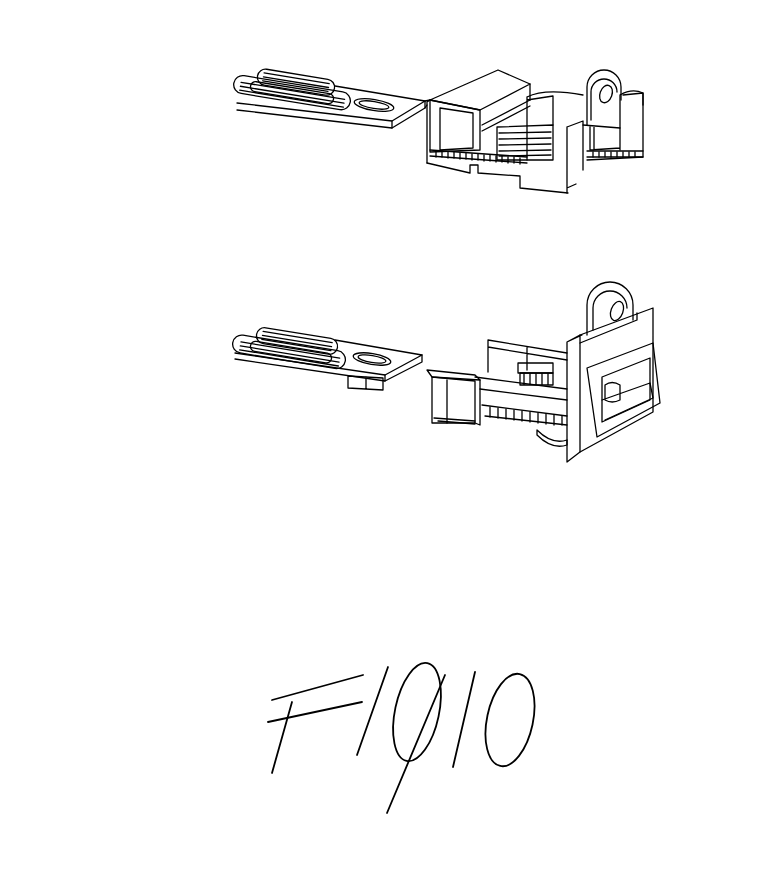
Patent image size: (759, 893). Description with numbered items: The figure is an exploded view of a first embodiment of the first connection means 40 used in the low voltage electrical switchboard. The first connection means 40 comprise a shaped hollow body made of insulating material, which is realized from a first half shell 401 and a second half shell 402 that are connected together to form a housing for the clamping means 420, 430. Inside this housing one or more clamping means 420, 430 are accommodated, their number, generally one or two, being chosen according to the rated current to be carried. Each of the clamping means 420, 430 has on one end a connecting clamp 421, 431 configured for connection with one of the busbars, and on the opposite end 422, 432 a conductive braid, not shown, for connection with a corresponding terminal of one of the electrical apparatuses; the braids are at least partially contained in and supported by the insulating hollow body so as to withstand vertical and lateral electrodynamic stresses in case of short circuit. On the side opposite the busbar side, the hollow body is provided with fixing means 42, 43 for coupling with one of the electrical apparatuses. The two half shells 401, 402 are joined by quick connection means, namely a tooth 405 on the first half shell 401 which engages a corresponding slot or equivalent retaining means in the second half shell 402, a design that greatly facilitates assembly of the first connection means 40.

The first connection means 40 is at (128, 124).
The clamping means 430 is at (343, 117).
The connecting clamp 431 is at (262, 102).
The opposite end 432 is at (402, 98).
The second half shell 402 is at (537, 68).
The fixing means 43 is at (617, 78).
The clamping means 420 is at (320, 387).
The connecting clamp 421 is at (232, 348).
The opposite end 422 is at (383, 376).
The first half shell 401 is at (520, 420).
The tooth 405 is at (533, 365).
The fixing means 42 is at (627, 425).